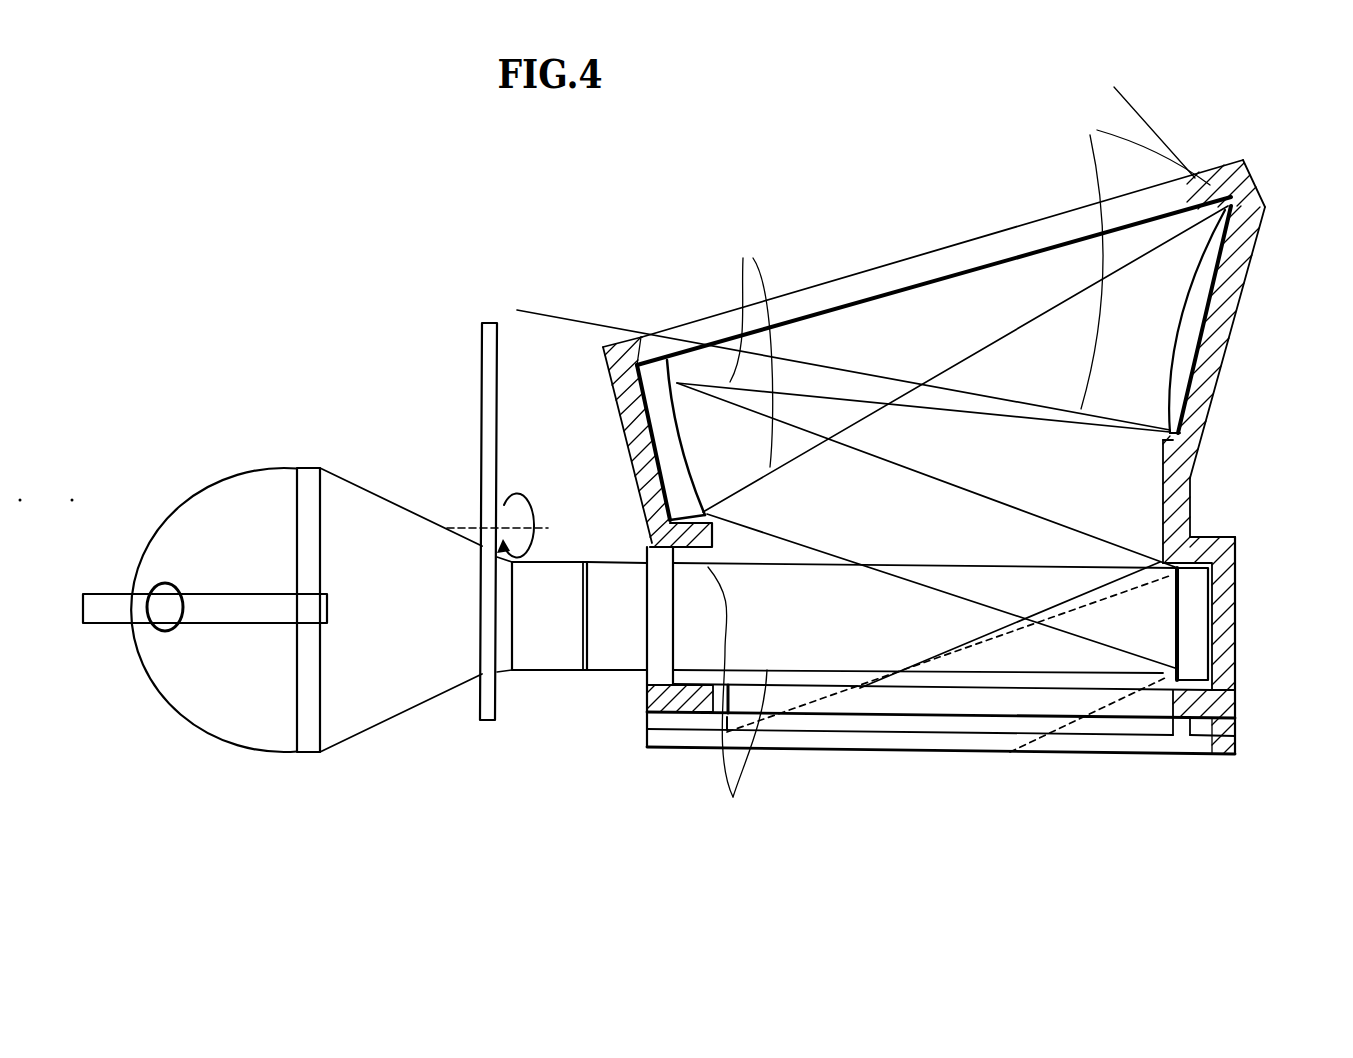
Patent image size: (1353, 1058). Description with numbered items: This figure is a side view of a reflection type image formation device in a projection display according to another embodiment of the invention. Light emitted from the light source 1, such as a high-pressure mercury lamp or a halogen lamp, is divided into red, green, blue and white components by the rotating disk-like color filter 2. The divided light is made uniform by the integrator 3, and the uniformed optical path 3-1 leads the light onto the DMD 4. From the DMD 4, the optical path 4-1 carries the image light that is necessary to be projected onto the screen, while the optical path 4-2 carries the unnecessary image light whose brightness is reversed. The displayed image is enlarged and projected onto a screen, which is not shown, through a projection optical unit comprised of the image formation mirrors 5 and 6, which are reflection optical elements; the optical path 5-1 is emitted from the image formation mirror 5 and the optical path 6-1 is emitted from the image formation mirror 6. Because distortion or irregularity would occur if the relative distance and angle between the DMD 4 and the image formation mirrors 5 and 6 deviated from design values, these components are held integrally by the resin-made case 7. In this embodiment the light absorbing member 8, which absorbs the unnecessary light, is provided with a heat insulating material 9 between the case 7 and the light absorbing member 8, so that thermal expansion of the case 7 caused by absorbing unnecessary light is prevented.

The light source 1 is at (297, 517).
The disk-like color filter 2 is at (482, 358).
The integrator 3 is at (550, 657).
The uniformed optical path 3-1 is at (737, 702).
The DMD 4 is at (1200, 677).
The optical path of image light 4-1 is at (1097, 535).
The optical path of unnecessary image light 4-2 is at (1162, 580).
The image formation mirror 5 is at (658, 358).
The optical path emitted from image formation mirror 5 5-1 is at (746, 343).
The image formation mirror 6 is at (1185, 357).
The optical path emitted from image formation mirror 6 6-1 is at (1131, 248).
The resin-made case 7 is at (1243, 290).
The light absorbing member 8 is at (912, 757).
The heat insulating material 9 is at (647, 718).